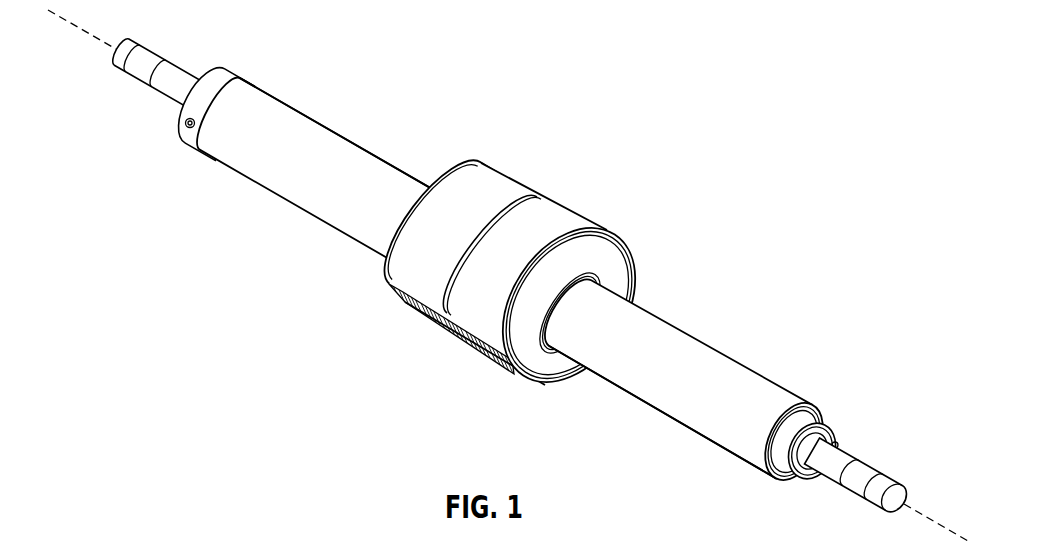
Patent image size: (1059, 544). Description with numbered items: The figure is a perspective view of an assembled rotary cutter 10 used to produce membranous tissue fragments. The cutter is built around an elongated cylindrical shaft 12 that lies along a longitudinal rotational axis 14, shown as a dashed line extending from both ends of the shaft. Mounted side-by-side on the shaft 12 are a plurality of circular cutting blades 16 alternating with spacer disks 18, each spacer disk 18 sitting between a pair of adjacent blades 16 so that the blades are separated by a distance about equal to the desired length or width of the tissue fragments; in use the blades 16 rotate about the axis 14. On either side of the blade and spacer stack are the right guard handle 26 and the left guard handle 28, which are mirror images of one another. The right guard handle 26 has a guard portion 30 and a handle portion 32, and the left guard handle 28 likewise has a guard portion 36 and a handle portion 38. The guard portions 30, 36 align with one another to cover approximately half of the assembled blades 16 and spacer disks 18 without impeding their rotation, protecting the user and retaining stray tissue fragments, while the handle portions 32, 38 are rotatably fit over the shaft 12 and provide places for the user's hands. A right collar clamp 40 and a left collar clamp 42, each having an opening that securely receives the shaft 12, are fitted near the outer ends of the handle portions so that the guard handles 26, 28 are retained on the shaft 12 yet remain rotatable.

The rotary cutter 10 is at (856, 121).
The cylindrical shaft 12 is at (848, 458).
The longitudinal rotational axis 14 is at (920, 518).
The circular cutting blades 16 is at (421, 320).
The spacer disks 18 is at (499, 325).
The right guard handle 26 is at (663, 318).
The left guard handle 28 is at (365, 148).
The guard portion 30 is at (557, 212).
The handle portion 32 is at (712, 363).
The guard portion 36 is at (505, 183).
The handle portion 38 is at (302, 128).
The right collar clamp 40 is at (802, 432).
The left collar clamp 42 is at (203, 72).